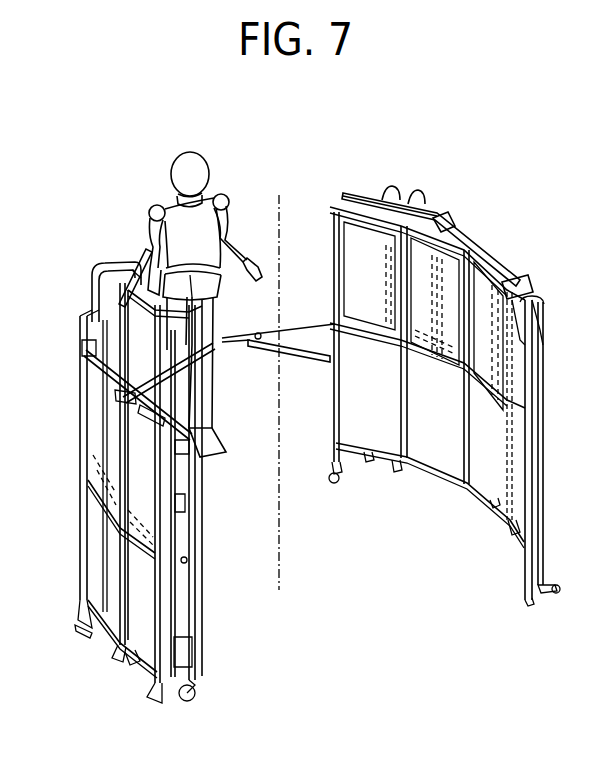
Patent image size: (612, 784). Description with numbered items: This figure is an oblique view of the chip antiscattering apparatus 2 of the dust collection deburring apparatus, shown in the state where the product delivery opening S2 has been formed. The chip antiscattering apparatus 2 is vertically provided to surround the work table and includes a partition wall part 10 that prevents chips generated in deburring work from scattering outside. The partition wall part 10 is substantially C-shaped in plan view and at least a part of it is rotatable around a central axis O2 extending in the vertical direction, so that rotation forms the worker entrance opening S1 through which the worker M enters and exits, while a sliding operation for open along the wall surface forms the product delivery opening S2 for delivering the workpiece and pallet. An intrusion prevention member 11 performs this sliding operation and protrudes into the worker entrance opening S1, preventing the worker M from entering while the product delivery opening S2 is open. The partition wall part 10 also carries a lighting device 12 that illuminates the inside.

The chip antiscattering apparatus 2 is at (517, 264).
The partition wall part 10 is at (83, 356).
The intrusion prevention member 11 is at (168, 378).
The lighting device 12 is at (138, 254).
The worker M is at (194, 152).
The central axis O2 is at (276, 381).
The worker entrance opening S1 is at (298, 216).
The product delivery opening S2 is at (358, 578).